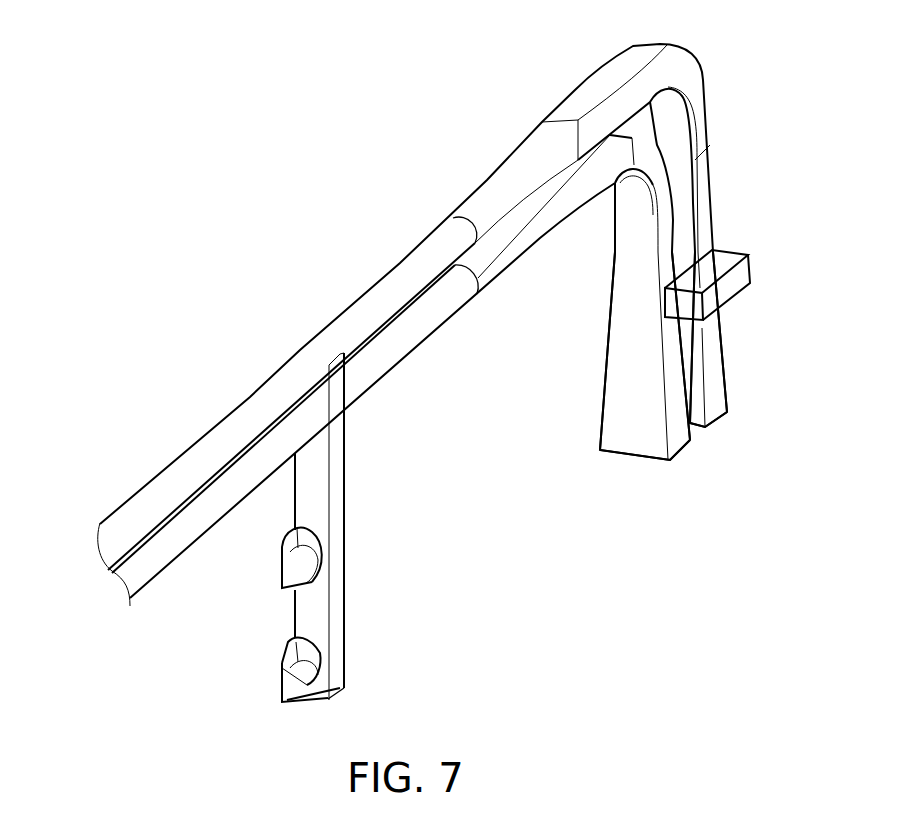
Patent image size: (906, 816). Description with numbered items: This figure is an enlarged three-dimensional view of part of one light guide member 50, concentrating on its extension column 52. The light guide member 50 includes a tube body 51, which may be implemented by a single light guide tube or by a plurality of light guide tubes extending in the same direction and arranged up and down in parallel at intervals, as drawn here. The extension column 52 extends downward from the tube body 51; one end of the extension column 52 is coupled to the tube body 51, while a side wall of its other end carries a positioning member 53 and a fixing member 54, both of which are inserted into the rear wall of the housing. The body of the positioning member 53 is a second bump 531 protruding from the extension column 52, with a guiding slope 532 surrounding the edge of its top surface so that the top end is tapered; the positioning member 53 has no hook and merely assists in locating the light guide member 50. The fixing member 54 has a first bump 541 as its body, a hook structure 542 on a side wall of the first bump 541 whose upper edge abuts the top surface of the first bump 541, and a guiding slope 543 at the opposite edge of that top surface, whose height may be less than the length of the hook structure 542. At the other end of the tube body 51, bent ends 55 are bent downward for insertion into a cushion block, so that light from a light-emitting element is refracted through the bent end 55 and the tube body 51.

The light guide member 50 is at (63, 88).
The tube body 51 is at (222, 432).
The extension column 52 is at (333, 493).
The positioning member 53 is at (420, 518).
The second bump 531 is at (297, 580).
The guiding slope 532 is at (310, 534).
The fixing member 54 is at (420, 628).
The first bump 541 is at (298, 684).
The hook structure 542 is at (293, 704).
The guiding slope 543 is at (292, 652).
The bent end 55 is at (715, 367).